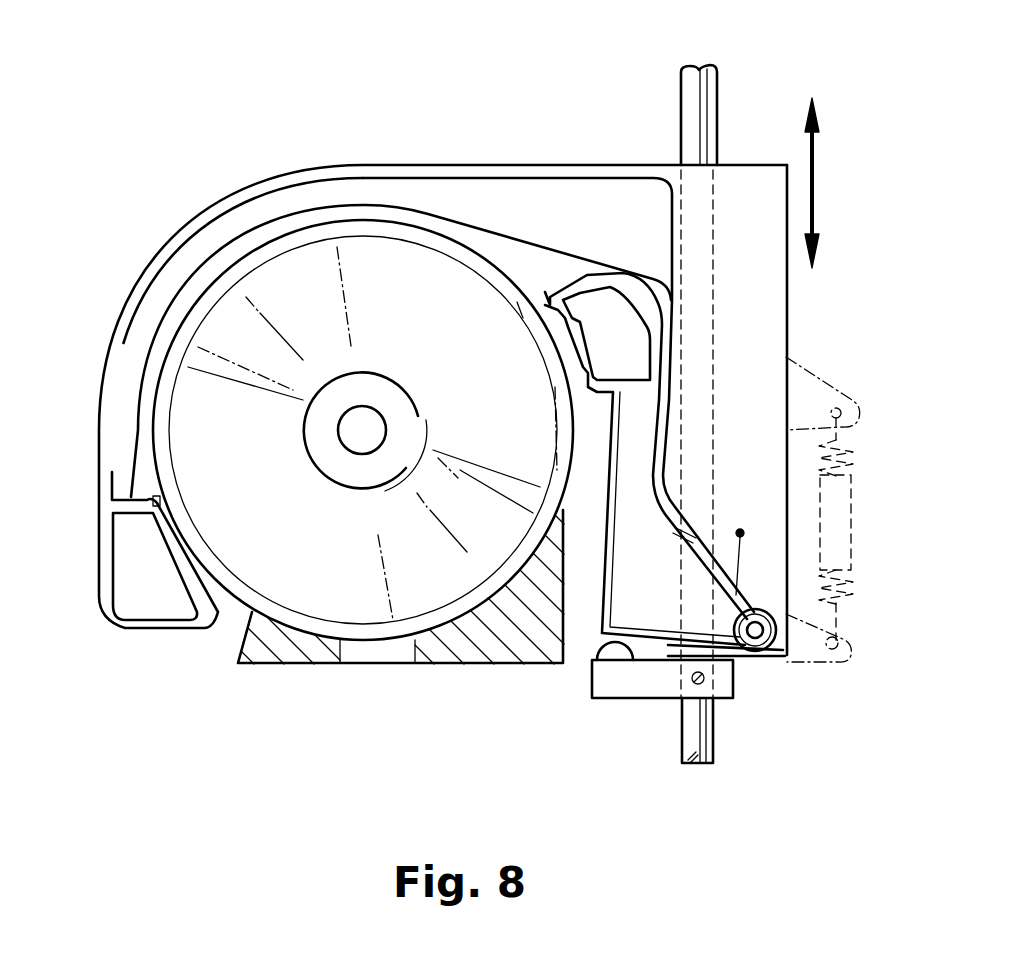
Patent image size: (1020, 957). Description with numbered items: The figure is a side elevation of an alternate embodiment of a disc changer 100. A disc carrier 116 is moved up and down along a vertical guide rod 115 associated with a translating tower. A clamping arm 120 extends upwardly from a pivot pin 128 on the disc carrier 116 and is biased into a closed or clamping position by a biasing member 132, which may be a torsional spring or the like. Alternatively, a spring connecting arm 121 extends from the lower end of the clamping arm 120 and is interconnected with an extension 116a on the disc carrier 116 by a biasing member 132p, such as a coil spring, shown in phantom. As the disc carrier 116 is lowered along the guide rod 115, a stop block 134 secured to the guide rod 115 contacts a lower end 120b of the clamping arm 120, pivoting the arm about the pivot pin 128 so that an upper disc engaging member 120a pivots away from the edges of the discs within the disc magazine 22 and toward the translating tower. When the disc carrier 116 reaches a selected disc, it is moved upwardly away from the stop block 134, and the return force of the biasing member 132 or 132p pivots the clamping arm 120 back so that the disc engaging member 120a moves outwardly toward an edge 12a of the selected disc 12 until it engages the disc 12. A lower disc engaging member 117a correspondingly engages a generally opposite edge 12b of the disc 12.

The disc changer 100 is at (560, 108).
The vertical guide rod 115 is at (717, 100).
The disc carrier 116 is at (752, 305).
The extension 116a is at (845, 368).
The disc 12 is at (258, 437).
The edge 12a is at (540, 320).
The generally opposite edge 12b is at (190, 546).
The disc magazine 22 is at (272, 648).
The lower disc engaging member 117a is at (132, 567).
The clamping arm 120 is at (627, 553).
The upper disc engaging member 120a is at (578, 350).
The lower end 120b is at (597, 648).
The spring connecting arm 121 is at (808, 655).
The pivot pin 128 is at (752, 653).
The biasing member 132 is at (741, 530).
The biasing member 132p is at (838, 522).
The stop block 134 is at (638, 680).